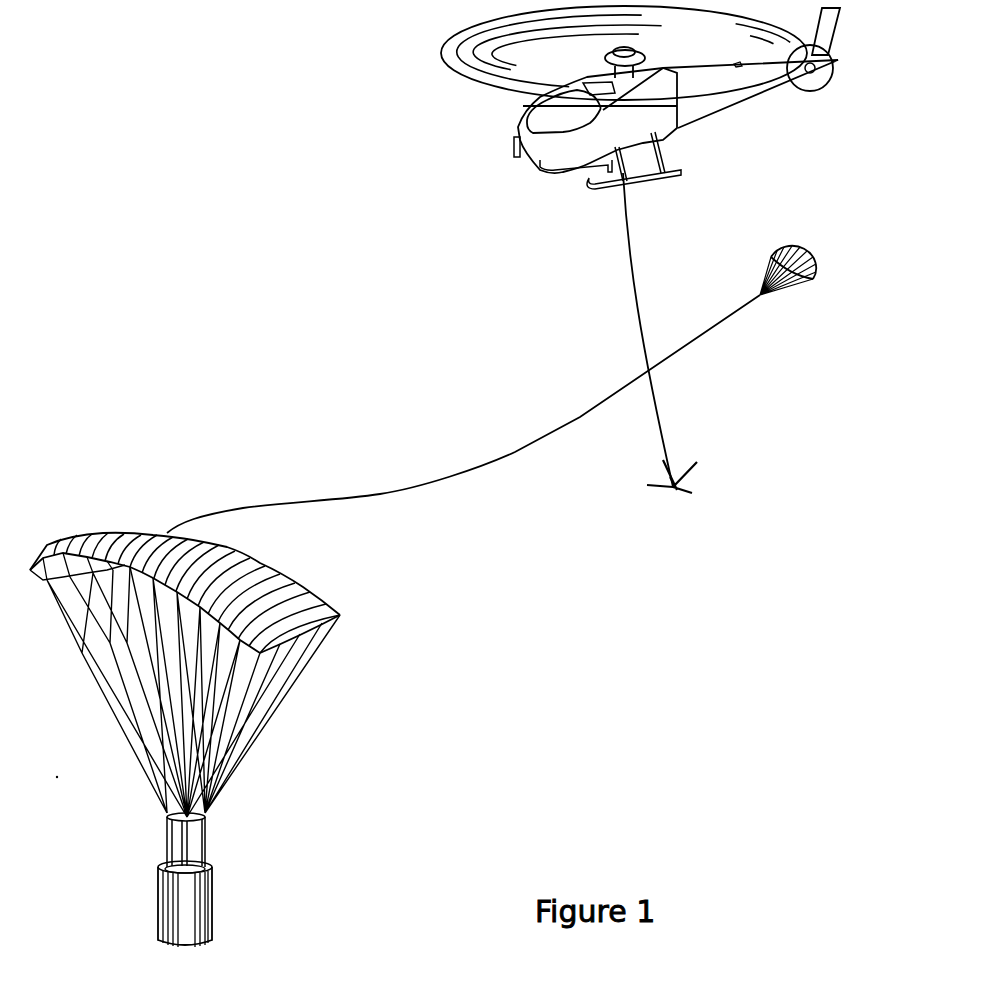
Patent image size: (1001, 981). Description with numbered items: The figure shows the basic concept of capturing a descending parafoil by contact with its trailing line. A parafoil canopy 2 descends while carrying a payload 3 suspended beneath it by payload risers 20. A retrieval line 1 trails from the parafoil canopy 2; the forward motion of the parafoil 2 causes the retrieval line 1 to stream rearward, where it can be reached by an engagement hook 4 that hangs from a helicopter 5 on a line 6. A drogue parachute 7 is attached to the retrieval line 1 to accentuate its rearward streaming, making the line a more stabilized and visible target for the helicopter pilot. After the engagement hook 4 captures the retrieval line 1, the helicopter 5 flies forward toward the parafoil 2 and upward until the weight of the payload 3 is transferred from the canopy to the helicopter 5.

The retrieval line 1 is at (515, 452).
The parafoil canopy 2 is at (310, 580).
The payload 3 is at (213, 908).
The engagement hook 4 is at (675, 465).
The helicopter 5 is at (710, 117).
The line 6 is at (637, 293).
The drogue parachute 7 is at (818, 260).
The payload risers 20 is at (206, 848).